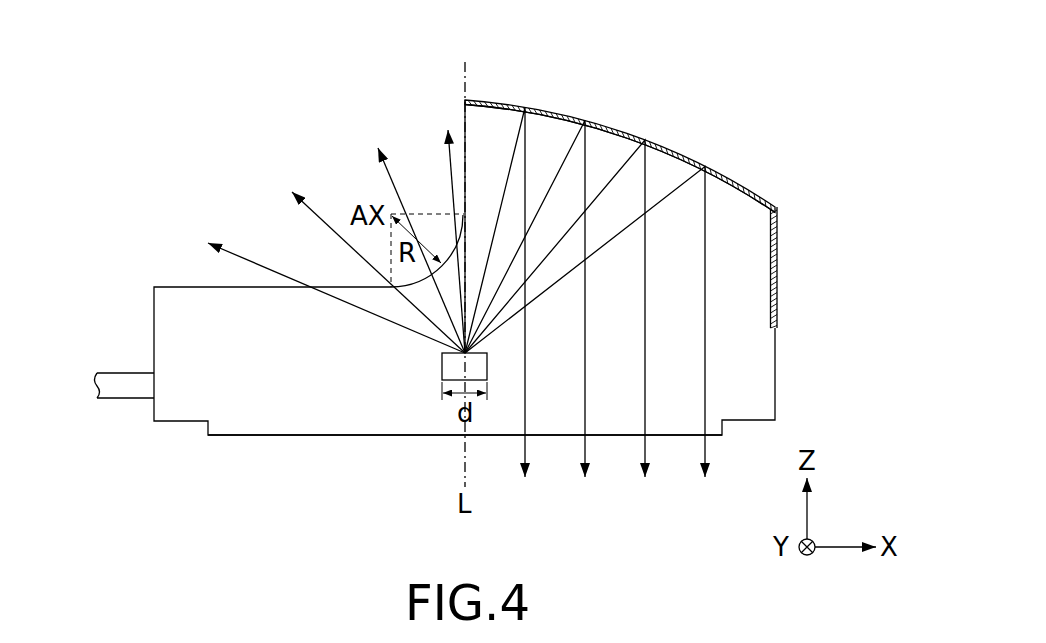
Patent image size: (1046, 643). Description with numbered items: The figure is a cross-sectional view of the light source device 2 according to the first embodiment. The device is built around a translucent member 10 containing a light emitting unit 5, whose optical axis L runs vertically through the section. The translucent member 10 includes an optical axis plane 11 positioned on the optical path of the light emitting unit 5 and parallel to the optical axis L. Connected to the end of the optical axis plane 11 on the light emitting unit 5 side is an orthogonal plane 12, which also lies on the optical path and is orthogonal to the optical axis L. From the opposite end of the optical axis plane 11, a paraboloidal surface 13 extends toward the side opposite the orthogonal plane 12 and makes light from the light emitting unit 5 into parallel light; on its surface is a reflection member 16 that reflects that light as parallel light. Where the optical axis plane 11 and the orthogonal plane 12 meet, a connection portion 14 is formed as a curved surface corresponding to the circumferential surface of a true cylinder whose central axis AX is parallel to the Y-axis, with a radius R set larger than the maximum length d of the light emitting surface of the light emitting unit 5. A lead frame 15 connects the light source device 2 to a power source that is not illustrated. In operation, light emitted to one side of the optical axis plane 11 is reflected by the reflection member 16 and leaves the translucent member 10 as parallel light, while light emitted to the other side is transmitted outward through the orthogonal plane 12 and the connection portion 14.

The light source device 2 is at (694, 140).
The reflection member 16 is at (553, 108).
The paraboloidal surface 13 is at (771, 198).
The optical axis plane 11 is at (463, 120).
The connection portion 14 is at (451, 255).
The orthogonal plane 12 is at (190, 287).
The translucent member 10 is at (261, 428).
The lead frame 15 is at (120, 392).
The light emitting unit 5 is at (441, 366).